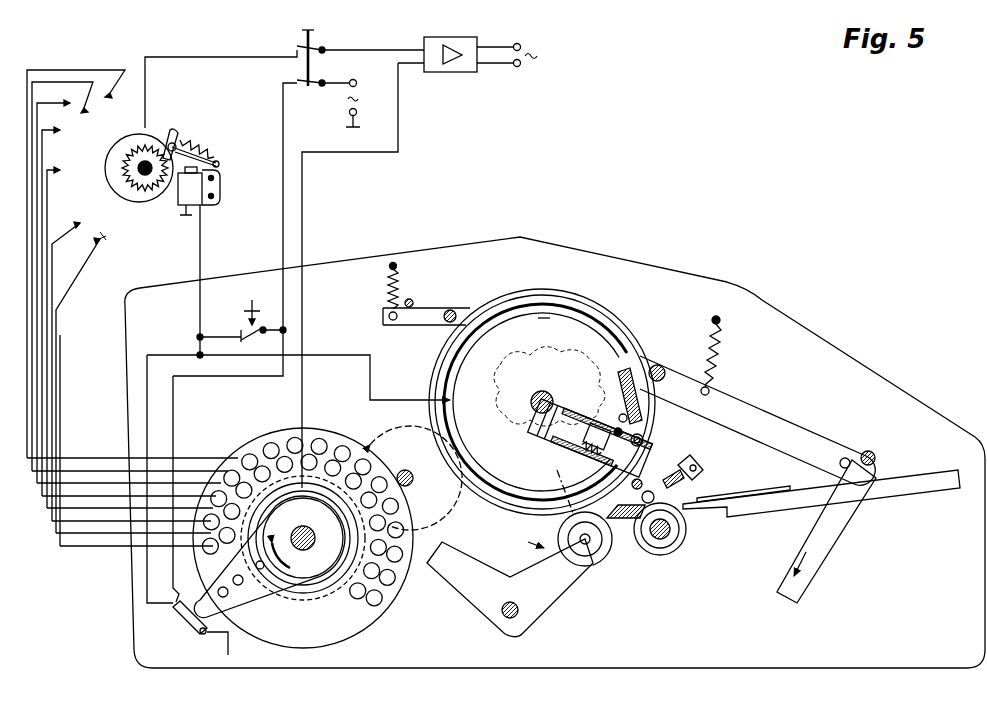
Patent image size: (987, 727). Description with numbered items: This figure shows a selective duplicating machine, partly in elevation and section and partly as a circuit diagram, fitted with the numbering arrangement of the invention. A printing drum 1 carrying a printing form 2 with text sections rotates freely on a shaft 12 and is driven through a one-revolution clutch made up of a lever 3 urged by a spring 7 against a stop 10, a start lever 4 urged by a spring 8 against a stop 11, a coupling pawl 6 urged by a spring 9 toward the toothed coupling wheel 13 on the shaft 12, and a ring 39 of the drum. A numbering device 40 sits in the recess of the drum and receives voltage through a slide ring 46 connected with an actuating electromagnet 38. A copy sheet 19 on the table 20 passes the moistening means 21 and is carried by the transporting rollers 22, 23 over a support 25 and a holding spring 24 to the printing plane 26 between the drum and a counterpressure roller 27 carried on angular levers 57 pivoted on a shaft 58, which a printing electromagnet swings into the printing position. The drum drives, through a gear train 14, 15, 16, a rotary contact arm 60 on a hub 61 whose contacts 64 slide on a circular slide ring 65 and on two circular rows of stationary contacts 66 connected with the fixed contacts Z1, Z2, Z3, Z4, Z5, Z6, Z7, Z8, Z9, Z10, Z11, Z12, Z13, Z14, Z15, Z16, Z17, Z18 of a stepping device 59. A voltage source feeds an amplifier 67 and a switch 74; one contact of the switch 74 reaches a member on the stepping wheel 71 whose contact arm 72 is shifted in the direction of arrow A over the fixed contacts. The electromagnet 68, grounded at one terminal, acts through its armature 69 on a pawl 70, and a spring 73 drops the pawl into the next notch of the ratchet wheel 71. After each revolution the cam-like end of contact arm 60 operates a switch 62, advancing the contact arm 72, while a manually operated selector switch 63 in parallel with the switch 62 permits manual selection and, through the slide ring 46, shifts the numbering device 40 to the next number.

The printing drum 1 is at (560, 296).
The printing form 2 is at (628, 312).
The lever 3 is at (433, 310).
The start lever 4 is at (750, 418).
The coupling pawl 6 is at (583, 325).
The spring 7 is at (394, 263).
The spring 8 is at (720, 347).
The spring 9 is at (595, 400).
The stop 10 is at (410, 299).
The stop 11 is at (871, 482).
The shaft 12 is at (542, 391).
The coupling wheel 13 is at (512, 366).
The gear train gear 14 is at (650, 355).
The gear train gear 15 is at (366, 443).
The gear train gear 16 is at (292, 598).
The copy sheet 19 is at (742, 495).
The table 20 is at (763, 505).
The moistening means 21 is at (703, 471).
The transporting rollers 22 is at (665, 540).
The transporting roller 23 is at (668, 484).
The holding spring 24 is at (625, 497).
The support 25 is at (630, 520).
The printing plane 26 is at (563, 468).
The counterpressure roller 27 is at (597, 557).
The actuating electromagnet 38 is at (532, 455).
The friction ring 39 is at (605, 316).
The numbering device 40 is at (619, 440).
The slide ring 46 is at (544, 318).
The angular levers 57 is at (548, 592).
The shaft 58 is at (510, 618).
The stepping device 59 is at (221, 182).
The rotary contact arm 60 is at (305, 552).
The disk hub 61 is at (312, 548).
The switch 62 is at (207, 636).
The selector switch 63 is at (250, 308).
The contacts 64 is at (260, 570).
The slide ring 65 is at (300, 588).
The stationary contacts 66 is at (210, 548).
The amplifier 67 is at (447, 37).
The electromagnet 68 is at (213, 208).
The armature 69 is at (218, 154).
The pawl 70 is at (163, 213).
The stepping wheel 71 is at (145, 191).
The contact arm 72 is at (130, 198).
The spring 73 is at (180, 142).
The switch 74 is at (303, 36).
The arrow A is at (95, 166).
The contact Z1 is at (105, 252).
The contact Z2 is at (91, 218).
The contact Z3 is at (79, 192).
The contact Z4 is at (77, 168).
The contact Z5 is at (79, 140).
The contact Z6 is at (87, 122).
The contact Z7 is at (105, 104).
The contact Z8 is at (126, 78).
The contact Z9 is at (164, 78).
The contact Z10 is at (192, 85).
The contact Z11 is at (220, 106).
The contact Z12 is at (237, 132).
The contact Z13 is at (248, 170).
The contact Z14 is at (248, 200).
The contact Z15 is at (207, 216).
The contact Z16 is at (200, 257).
The contact Z17 is at (163, 267).
The contact Z18 is at (128, 266).